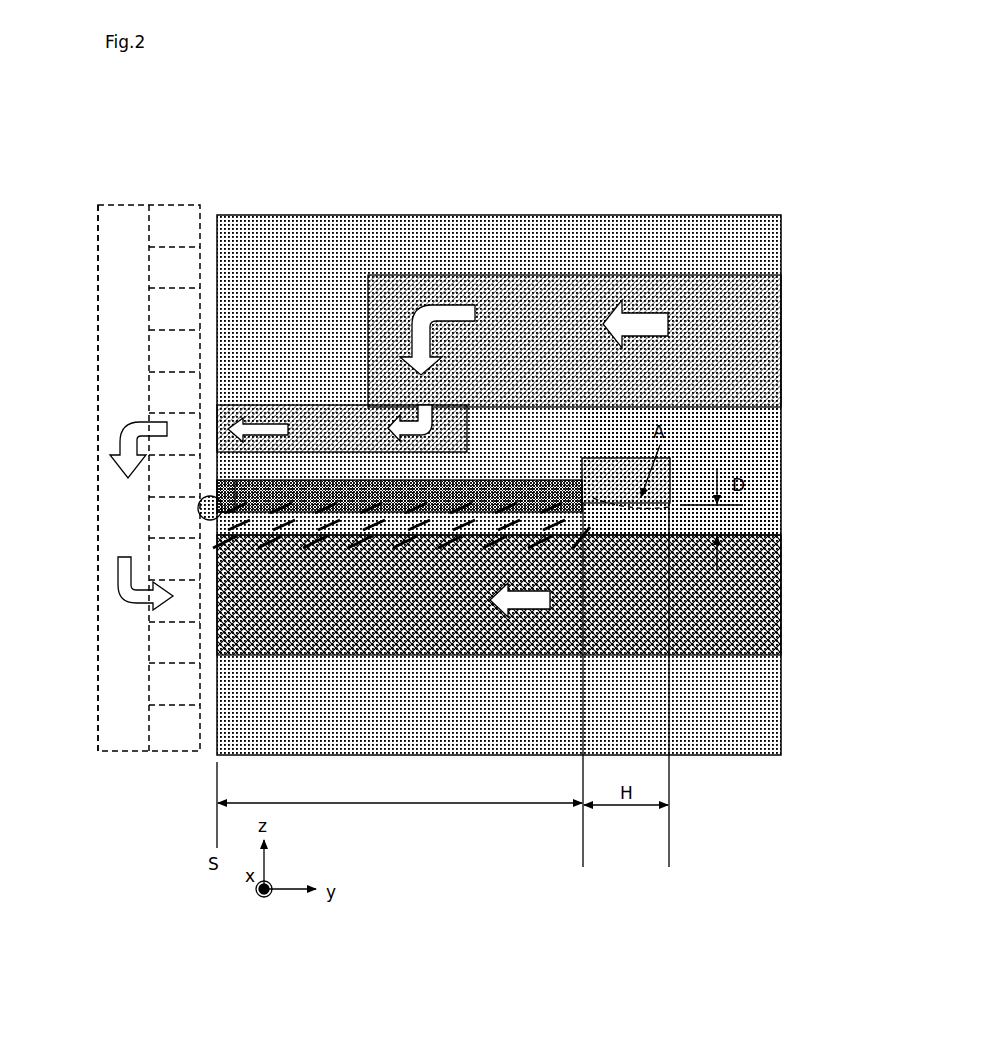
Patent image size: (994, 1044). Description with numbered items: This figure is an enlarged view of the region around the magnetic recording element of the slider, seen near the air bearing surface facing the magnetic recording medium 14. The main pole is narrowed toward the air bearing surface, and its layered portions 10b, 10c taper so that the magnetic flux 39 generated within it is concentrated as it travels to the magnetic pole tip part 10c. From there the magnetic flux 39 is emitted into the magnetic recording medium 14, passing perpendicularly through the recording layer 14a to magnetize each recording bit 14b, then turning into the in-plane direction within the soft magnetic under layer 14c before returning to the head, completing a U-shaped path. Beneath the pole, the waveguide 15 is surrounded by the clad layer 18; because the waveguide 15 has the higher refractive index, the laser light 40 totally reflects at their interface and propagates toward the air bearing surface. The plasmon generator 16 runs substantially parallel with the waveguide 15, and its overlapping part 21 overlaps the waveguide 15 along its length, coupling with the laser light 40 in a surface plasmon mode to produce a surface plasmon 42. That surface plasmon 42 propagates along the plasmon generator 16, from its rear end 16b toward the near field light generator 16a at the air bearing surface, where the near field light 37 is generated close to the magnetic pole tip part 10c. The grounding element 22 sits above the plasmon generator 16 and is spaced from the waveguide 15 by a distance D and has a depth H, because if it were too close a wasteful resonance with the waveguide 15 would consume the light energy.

The magnetic recording medium 14 is at (157, 186).
The recording layer 14a is at (172, 755).
The recording bit 14b is at (180, 222).
The under layer 14c is at (125, 755).
The magnetic pole layer 10b is at (483, 275).
The magnetic pole tip part 10c is at (278, 405).
The magnetic flux 39 is at (438, 307).
The plasmon generator 16 is at (578, 478).
The near field light generator 16a is at (205, 508).
The rear end of plasmon generator 16b is at (582, 485).
The near field light 37 is at (207, 497).
The grounding element 22 is at (673, 470).
The clad layer 18 is at (783, 455).
The waveguide 15 is at (533, 668).
The laser light 40 is at (533, 612).
The surface plasmon 42 is at (387, 548).
The overlapping part 21 is at (425, 805).